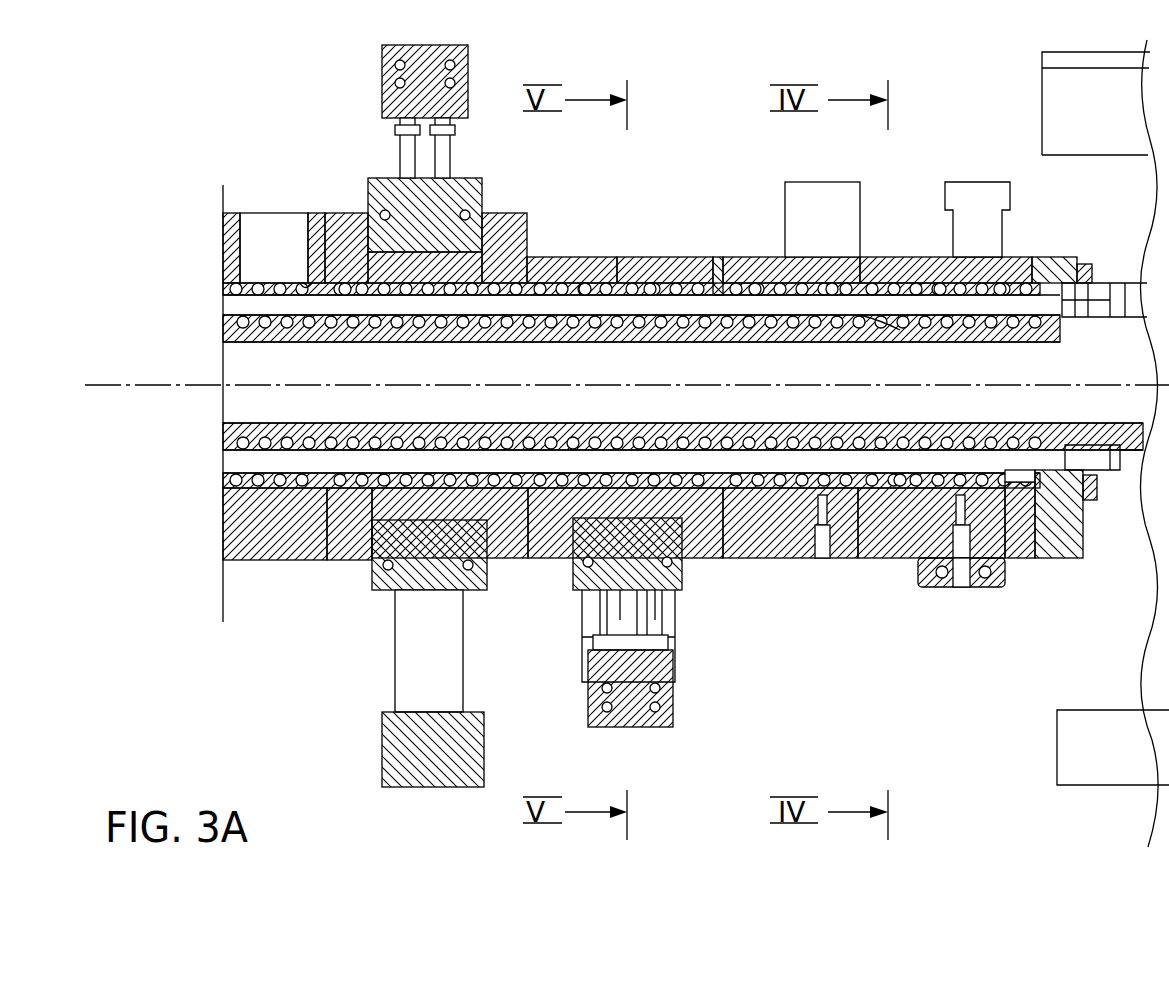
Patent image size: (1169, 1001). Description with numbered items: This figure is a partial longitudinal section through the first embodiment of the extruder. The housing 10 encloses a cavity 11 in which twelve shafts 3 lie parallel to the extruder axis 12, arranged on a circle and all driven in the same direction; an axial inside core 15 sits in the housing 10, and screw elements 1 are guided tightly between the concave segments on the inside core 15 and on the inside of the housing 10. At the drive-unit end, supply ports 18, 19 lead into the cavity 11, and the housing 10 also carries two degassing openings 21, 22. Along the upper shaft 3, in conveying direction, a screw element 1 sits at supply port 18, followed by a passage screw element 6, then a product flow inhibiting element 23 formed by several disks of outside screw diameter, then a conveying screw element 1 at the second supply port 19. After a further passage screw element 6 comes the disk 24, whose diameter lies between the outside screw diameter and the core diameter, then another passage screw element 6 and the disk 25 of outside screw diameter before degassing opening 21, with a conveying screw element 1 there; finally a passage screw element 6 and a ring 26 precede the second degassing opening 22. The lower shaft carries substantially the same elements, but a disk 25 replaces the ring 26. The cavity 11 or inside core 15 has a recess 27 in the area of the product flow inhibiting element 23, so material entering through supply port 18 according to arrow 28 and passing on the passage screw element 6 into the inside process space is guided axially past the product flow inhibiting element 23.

The screw element 1 is at (585, 288).
The shaft 3 is at (235, 300).
The passage screw element 6 is at (345, 285).
The housing 10 is at (255, 545).
The cavity 11 is at (362, 495).
The extruder axis 12 is at (195, 385).
The inside core 15 is at (578, 378).
The supply port 18 is at (980, 178).
The supply port 19 is at (795, 178).
The degassing opening 21 is at (572, 250).
The degassing opening 22 is at (257, 205).
The product flow inhibiting element 23 is at (890, 290).
The disk 24 is at (718, 285).
The disk 25 is at (617, 290).
The ring 26 is at (300, 285).
The recess 27 is at (878, 330).
The arrow 28 is at (862, 328).